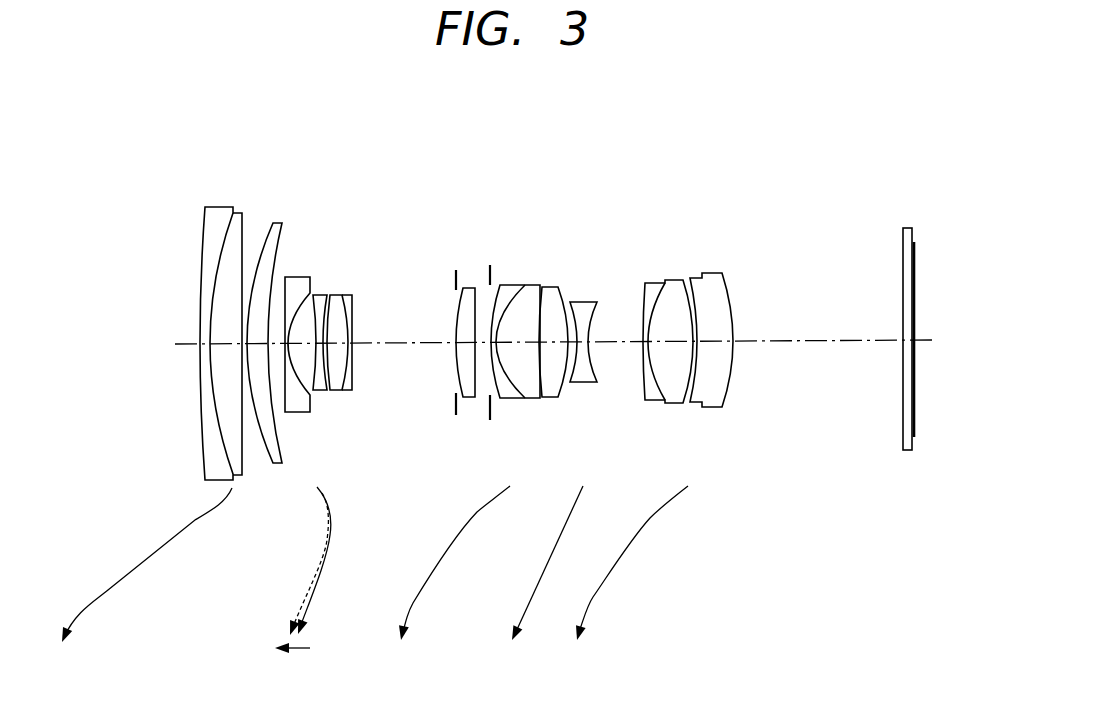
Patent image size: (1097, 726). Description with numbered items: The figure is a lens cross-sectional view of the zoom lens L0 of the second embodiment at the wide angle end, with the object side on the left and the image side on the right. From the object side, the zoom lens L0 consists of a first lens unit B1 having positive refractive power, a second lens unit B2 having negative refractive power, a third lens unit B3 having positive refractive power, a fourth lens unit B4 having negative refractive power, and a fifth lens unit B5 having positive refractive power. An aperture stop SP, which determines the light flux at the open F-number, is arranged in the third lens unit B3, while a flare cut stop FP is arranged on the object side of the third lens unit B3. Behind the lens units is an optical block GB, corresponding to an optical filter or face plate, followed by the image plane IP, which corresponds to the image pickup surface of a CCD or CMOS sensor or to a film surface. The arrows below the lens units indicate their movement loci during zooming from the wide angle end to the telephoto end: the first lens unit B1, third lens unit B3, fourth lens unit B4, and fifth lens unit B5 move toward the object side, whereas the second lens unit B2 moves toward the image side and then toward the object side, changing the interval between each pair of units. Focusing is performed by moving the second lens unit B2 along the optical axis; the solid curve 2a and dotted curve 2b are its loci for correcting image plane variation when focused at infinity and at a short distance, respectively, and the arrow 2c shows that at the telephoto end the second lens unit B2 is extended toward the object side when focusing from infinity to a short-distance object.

The zoom lens L0 is at (194, 143).
The first lens unit B1 is at (272, 198).
The second lens unit B2 is at (280, 198).
The third lens unit B3 is at (455, 198).
The fourth lens unit B4 is at (598, 198).
The fifth lens unit B5 is at (735, 198).
The flare cut stop FP is at (455, 405).
The aperture stop SP is at (492, 410).
The optical block GB is at (913, 193).
The image plane IP is at (916, 277).
The solid curve 2a is at (308, 607).
The dotted curve 2b is at (316, 580).
The arrow 2c is at (300, 649).